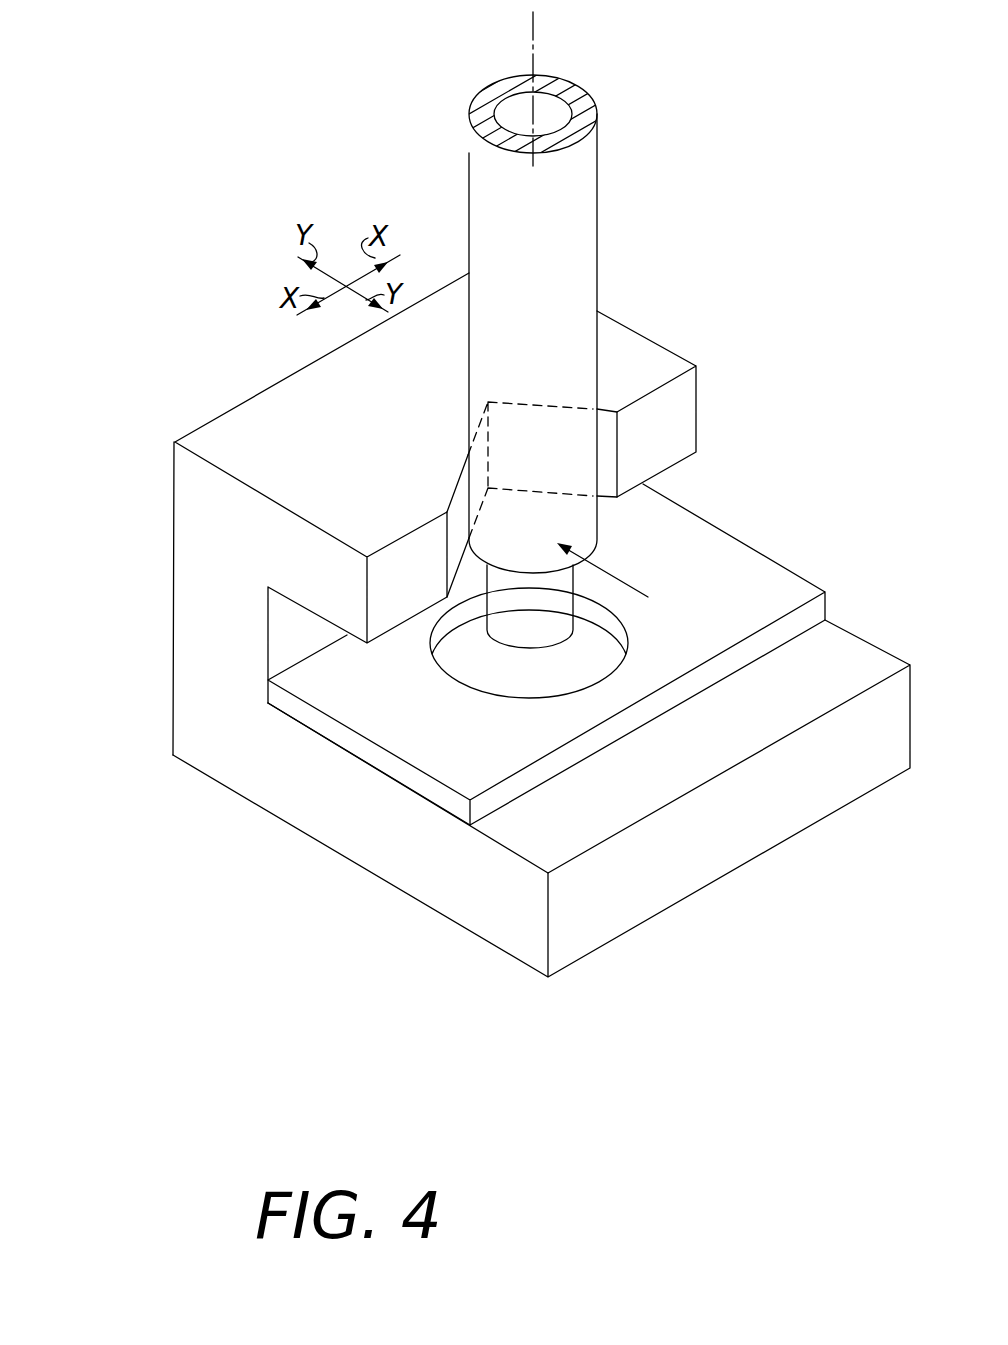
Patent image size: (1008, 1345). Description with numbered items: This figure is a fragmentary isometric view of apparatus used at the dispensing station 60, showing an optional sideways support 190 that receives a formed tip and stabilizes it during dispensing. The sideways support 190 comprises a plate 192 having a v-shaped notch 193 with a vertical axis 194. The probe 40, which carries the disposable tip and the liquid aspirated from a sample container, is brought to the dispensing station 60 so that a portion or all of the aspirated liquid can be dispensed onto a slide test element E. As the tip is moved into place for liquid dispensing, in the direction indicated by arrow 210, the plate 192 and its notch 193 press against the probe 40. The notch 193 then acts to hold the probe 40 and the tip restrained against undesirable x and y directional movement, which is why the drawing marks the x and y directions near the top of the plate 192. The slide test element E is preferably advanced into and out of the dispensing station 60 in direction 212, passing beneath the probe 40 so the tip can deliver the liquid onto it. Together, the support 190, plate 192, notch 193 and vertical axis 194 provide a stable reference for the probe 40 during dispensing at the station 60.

The probe 40 is at (470, 197).
The dispensing station 60 is at (338, 920).
The sideways support 190 is at (473, 648).
The plate 192 is at (262, 412).
The v-shaped notch 193 is at (458, 496).
The vertical axis 194 is at (533, 43).
The arrow 210 is at (620, 577).
The direction 212 is at (393, 780).
The slide test element E is at (650, 707).